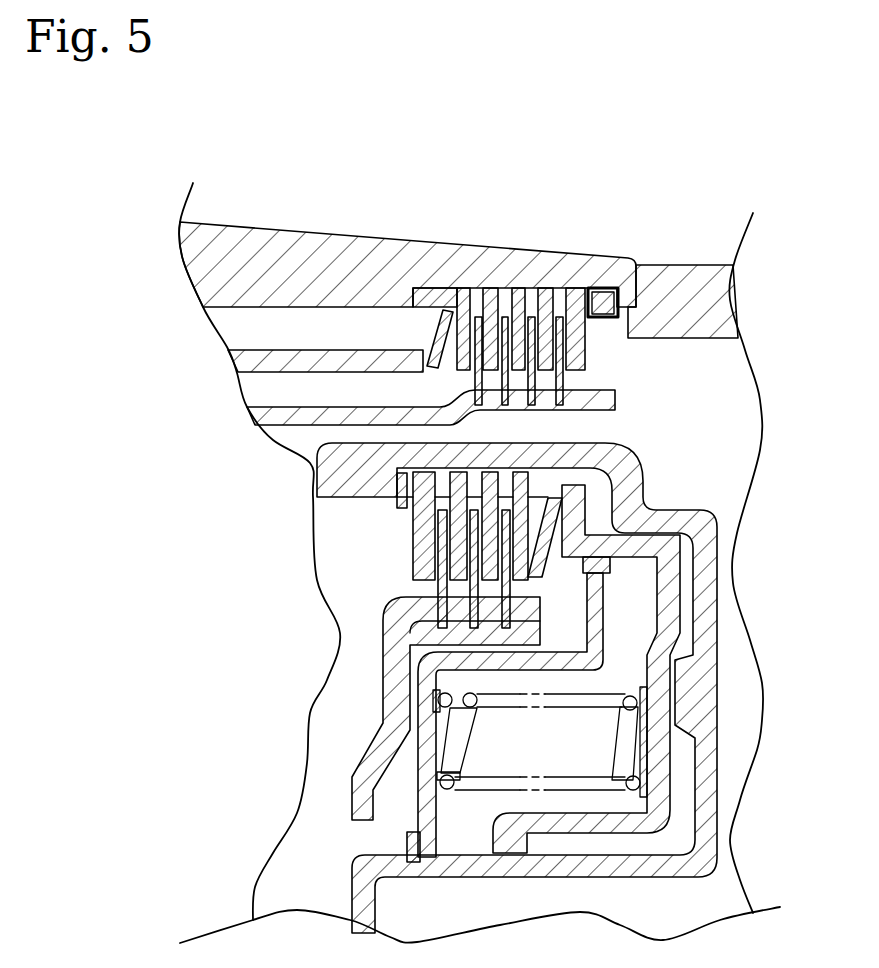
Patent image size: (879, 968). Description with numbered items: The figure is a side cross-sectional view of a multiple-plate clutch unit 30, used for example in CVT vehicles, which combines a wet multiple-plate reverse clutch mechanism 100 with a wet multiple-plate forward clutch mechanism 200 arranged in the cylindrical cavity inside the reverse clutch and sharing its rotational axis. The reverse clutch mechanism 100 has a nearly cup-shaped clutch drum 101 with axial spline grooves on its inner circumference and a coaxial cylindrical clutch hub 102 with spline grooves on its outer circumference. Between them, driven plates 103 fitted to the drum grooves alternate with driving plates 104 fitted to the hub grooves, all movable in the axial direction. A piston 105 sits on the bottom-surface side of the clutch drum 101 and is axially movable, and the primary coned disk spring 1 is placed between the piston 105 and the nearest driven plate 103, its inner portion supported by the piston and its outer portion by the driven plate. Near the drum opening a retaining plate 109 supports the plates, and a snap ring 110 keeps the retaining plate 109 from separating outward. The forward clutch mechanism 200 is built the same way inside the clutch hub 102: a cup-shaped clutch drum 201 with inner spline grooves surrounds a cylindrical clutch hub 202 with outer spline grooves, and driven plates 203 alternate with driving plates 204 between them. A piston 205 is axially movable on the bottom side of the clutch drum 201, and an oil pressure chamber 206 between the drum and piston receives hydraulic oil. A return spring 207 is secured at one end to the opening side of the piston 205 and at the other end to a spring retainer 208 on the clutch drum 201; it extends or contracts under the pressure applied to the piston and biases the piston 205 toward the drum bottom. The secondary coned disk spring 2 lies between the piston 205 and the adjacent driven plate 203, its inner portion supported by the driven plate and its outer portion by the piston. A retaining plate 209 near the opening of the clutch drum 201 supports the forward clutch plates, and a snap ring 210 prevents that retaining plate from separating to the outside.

The clutch unit 30 is at (135, 200).
The reverse clutch mechanism 100 is at (245, 193).
The clutch drum 101 is at (290, 240).
The clutch hub 102 is at (415, 413).
The piston 105 is at (240, 355).
The primary coned disk spring 1 is at (440, 320).
The driven plates 103 is at (465, 305).
The driving plates 104 is at (530, 320).
The retaining plate 109 is at (573, 290).
The snap ring 110 is at (601, 290).
The forward clutch mechanism 200 is at (216, 817).
The driven plates 203 is at (545, 440).
The clutch drum 201 is at (640, 492).
The oil pressure chamber 206 is at (678, 648).
The snap ring 210 is at (400, 490).
The retaining plate 209 is at (417, 577).
The driving plates 204 is at (474, 556).
The secondary coned disk spring 2 is at (690, 540).
The piston 205 is at (663, 600).
The spring retainer 208 is at (420, 810).
The clutch hub 202 is at (533, 610).
The return spring 207 is at (628, 745).